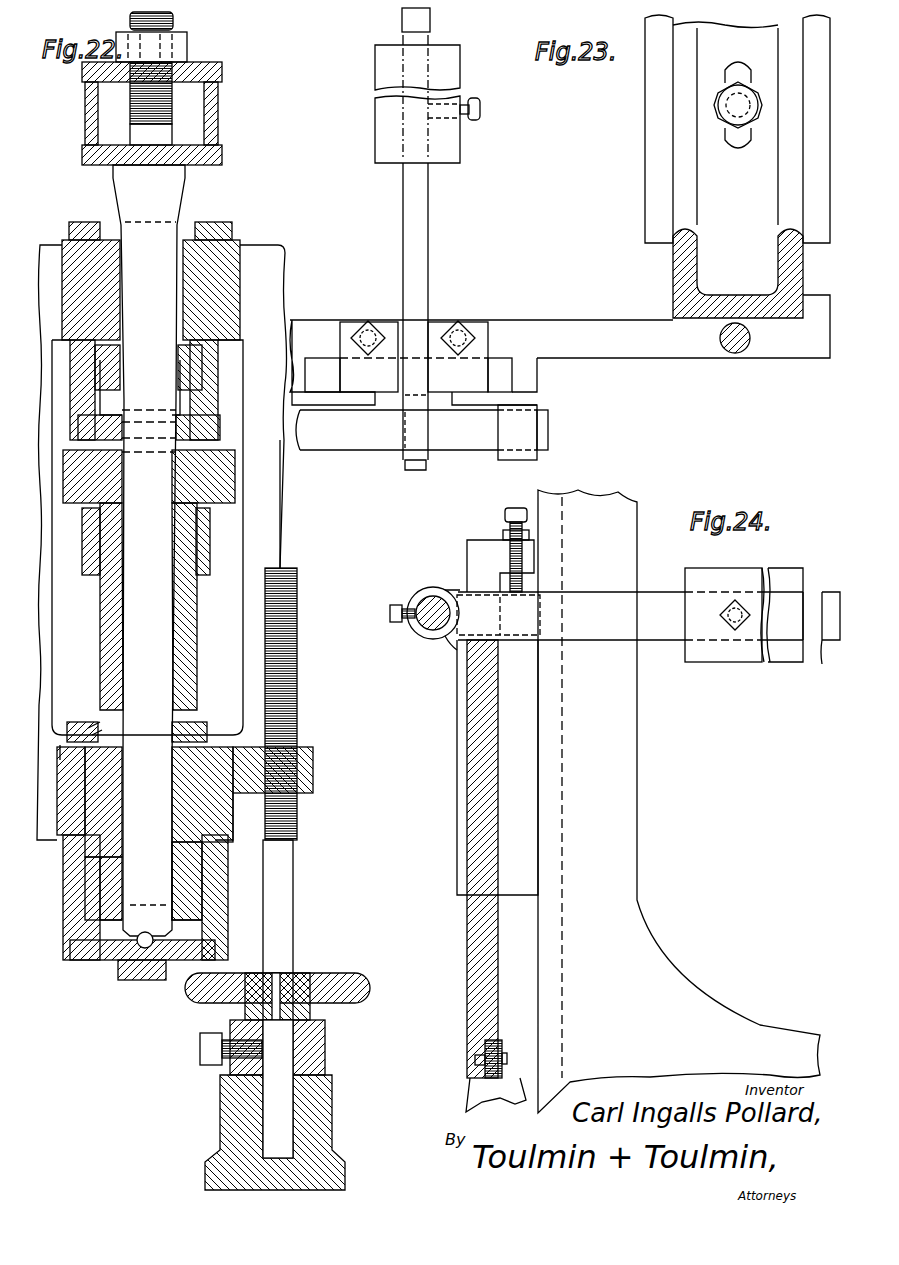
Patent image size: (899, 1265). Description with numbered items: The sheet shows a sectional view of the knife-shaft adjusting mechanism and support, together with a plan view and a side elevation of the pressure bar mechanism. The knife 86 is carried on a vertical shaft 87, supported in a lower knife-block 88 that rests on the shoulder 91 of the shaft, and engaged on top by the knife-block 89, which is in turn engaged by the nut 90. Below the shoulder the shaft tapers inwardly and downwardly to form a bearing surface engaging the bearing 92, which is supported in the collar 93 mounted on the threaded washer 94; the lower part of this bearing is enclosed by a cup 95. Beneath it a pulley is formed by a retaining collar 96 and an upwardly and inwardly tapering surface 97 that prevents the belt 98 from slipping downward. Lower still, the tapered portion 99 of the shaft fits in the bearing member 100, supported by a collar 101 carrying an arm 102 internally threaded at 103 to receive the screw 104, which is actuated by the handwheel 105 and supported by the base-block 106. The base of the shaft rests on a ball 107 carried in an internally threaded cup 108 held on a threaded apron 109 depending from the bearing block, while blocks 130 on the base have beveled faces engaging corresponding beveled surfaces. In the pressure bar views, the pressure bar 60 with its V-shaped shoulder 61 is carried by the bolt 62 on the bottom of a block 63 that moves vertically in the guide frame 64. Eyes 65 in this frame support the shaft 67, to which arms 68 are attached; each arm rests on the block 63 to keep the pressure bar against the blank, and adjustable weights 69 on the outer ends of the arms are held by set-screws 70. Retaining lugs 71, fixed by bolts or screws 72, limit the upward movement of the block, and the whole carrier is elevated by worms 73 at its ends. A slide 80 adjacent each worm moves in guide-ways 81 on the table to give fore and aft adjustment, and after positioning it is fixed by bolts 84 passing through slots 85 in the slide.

In FIG. 24, the pressure bar 60 is at (500, 1042).
In FIG. 24, the V-shaped shoulder 61 is at (478, 1092).
In FIG. 24, the bolt 62 is at (506, 1050).
In FIG. 23, the block 63 is at (500, 365).
In FIG. 24, the block 63 is at (467, 820).
In FIG. 23, the guide frame 64 is at (598, 328).
In FIG. 24, the guide frame 64 is at (457, 722).
In FIG. 23, the eyes 65 is at (525, 418).
In FIG. 24, the eyes 65 is at (412, 632).
In FIG. 23, the shaft 67 is at (549, 425).
In FIG. 24, the shaft 67 is at (433, 600).
In FIG. 23, the arms 68 is at (430, 258).
In FIG. 24, the arms 68 is at (652, 605).
In FIG. 23, the adjustable weights 69 is at (462, 148).
In FIG. 24, the adjustable weights 69 is at (722, 672).
In FIG. 23, the set-screws 70 is at (481, 108).
In FIG. 24, the set-screws 70 is at (733, 598).
In FIG. 23, the retaining lugs 71 is at (478, 324).
In FIG. 24, the retaining lugs 71 is at (490, 543).
In FIG. 23, the bolts or screws 72 is at (460, 322).
In FIG. 24, the bolts or screws 72 is at (520, 505).
In FIG. 23, the worms 73 is at (735, 353).
In FIG. 23, the slide 80 is at (673, 275).
In FIG. 24, the slide 80 is at (605, 900).
In FIG. 23, the guide-ways 81 is at (645, 186).
In FIG. 23, the bolts 84 is at (730, 115).
In FIG. 23, the slots 85 is at (745, 146).
In FIG. 22, the knife 86 is at (219, 116).
In FIG. 22, the vertical shaft 87 is at (174, 16).
In FIG. 22, the lower knife-block 88 is at (223, 156).
In FIG. 22, the knife-block 89 is at (223, 70).
In FIG. 22, the nut 90 is at (188, 52).
In FIG. 22, the shoulder 91 is at (180, 166).
In FIG. 22, the bearing 92 is at (230, 232).
In FIG. 22, the collar 93 is at (232, 250).
In FIG. 22, the threaded washer 94 is at (228, 342).
In FIG. 22, the cup 95 is at (222, 428).
In FIG. 22, the retaining collar 96 is at (222, 487).
In FIG. 22, the upwardly and inwardly tapering surface 97 is at (197, 542).
In FIG. 22, the belt 98 is at (195, 562).
In FIG. 22, the tapered portion 99 is at (176, 748).
In FIG. 22, the bearing member 100 is at (94, 722).
In FIG. 22, the collar 101 is at (60, 745).
In FIG. 22, the arm 102 is at (296, 746).
In FIG. 22, the internal thread 103 is at (312, 778).
In FIG. 22, the screw 104 is at (286, 702).
In FIG. 22, the handwheel 105 is at (350, 973).
In FIG. 22, the base-block 106 is at (330, 1082).
In FIG. 22, the ball 107 is at (112, 962).
In FIG. 22, the internally threaded cup 108 is at (142, 966).
In FIG. 22, the threaded apron 109 is at (212, 890).
In FIG. 22, the blocks 130 is at (270, 500).